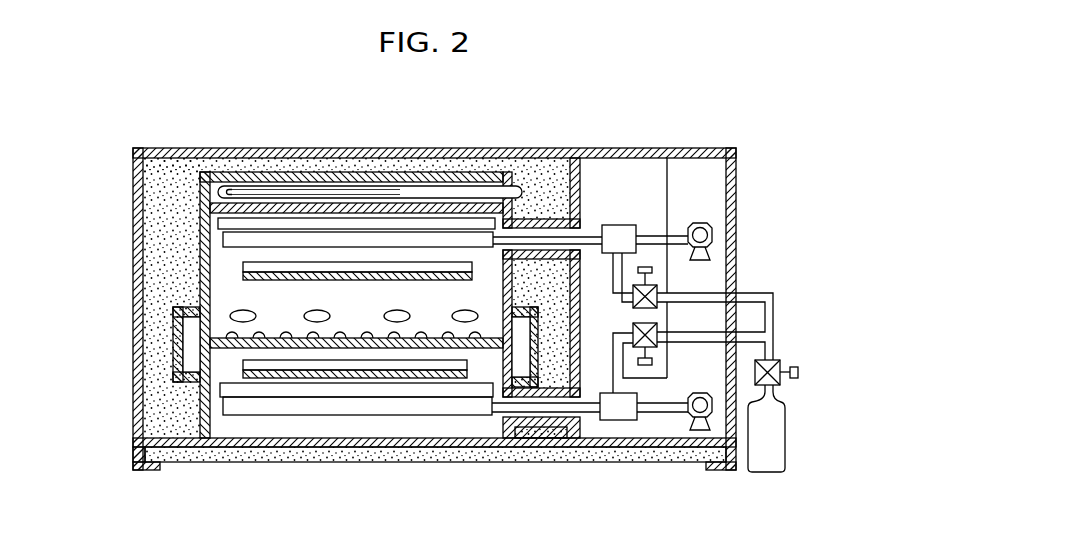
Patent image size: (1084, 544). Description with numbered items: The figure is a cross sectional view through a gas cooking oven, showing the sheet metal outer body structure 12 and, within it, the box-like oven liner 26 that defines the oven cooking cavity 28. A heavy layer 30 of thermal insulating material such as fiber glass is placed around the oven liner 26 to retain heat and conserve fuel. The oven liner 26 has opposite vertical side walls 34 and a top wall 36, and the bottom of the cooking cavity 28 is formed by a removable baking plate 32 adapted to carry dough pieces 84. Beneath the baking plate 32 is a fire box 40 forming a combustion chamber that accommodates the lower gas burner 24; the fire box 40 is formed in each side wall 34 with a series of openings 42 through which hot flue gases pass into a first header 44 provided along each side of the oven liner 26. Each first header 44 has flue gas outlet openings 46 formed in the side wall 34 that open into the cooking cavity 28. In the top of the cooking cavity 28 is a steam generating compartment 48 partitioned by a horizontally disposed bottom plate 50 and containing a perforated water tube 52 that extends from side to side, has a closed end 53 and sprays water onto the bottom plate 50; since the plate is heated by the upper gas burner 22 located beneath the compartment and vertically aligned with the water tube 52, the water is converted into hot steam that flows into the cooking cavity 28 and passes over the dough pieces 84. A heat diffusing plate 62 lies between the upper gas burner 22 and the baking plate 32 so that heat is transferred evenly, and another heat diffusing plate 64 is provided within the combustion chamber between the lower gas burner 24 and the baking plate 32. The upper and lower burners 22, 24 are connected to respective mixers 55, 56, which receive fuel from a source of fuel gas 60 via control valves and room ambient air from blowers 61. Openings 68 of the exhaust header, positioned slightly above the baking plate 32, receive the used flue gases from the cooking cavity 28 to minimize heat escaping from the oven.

The body structure 12 is at (160, 149).
The upper gas burner 22 is at (240, 243).
The lower gas burner 24 is at (253, 410).
The oven liner 26 is at (199, 230).
The cooking cavity 28 is at (372, 307).
The layer of thermal insulating material 30 is at (540, 165).
The baking plate 32 is at (230, 348).
The side wall 34 is at (517, 287).
The top wall 36 is at (300, 184).
The fire box 40 is at (420, 425).
The openings 42 is at (200, 362).
The first header 44 is at (173, 318).
The flue gas outlet openings 46 is at (198, 330).
The steam generating compartment 48 is at (452, 187).
The bottom plate 50 is at (347, 207).
The water tube 52 is at (398, 193).
The heater end cap 53 is at (222, 192).
The mixer 55 is at (617, 232).
The mixer 56 is at (620, 407).
The source of fuel gas 60 is at (777, 414).
The blower 61 is at (706, 225).
The heat diffusing plate 62 is at (232, 278).
The heat diffusing plate 64 is at (320, 363).
The openings 68 is at (307, 312).
The dough pieces 84 is at (463, 350).